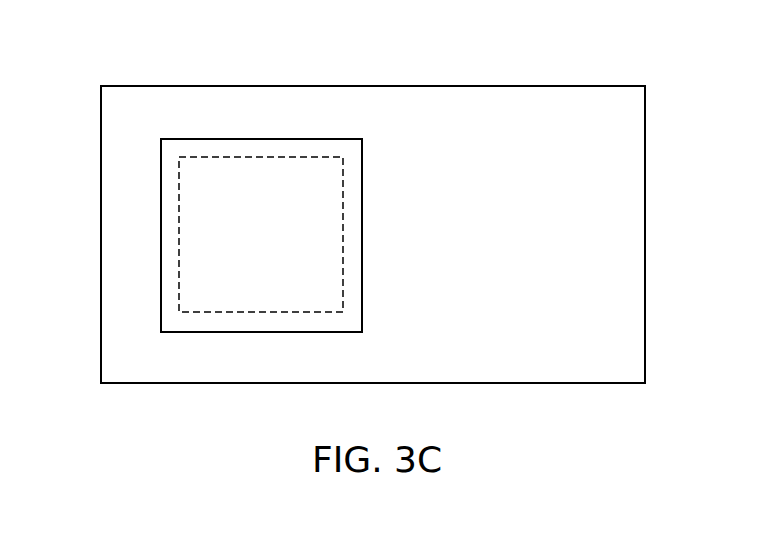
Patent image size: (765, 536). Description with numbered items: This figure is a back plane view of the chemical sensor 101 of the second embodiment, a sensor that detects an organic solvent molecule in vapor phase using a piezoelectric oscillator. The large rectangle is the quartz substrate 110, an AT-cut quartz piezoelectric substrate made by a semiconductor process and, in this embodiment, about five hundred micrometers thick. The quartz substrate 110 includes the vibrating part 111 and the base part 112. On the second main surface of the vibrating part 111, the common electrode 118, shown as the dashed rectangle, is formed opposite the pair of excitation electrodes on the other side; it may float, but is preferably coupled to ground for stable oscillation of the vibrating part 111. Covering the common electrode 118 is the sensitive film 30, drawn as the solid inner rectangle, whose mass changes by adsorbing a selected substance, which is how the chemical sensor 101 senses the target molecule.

The chemical sensor 101 is at (113, 63).
The quartz substrate 110 is at (201, 79).
The vibrating part 111 is at (255, 383).
The base part 112 is at (510, 383).
The sensitive film 30 is at (280, 150).
The common electrode 118 is at (240, 177).